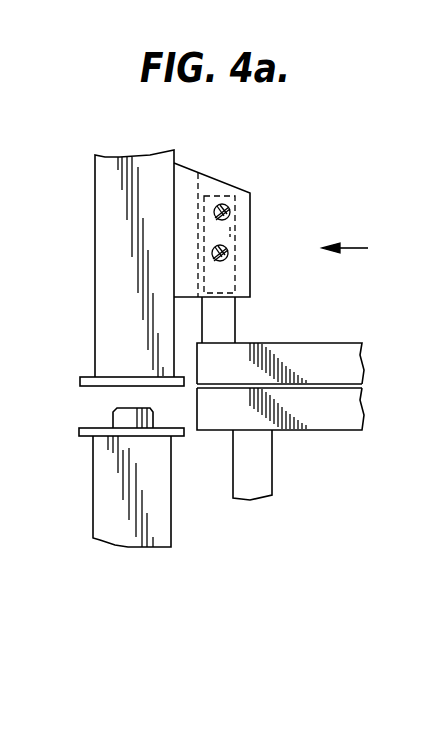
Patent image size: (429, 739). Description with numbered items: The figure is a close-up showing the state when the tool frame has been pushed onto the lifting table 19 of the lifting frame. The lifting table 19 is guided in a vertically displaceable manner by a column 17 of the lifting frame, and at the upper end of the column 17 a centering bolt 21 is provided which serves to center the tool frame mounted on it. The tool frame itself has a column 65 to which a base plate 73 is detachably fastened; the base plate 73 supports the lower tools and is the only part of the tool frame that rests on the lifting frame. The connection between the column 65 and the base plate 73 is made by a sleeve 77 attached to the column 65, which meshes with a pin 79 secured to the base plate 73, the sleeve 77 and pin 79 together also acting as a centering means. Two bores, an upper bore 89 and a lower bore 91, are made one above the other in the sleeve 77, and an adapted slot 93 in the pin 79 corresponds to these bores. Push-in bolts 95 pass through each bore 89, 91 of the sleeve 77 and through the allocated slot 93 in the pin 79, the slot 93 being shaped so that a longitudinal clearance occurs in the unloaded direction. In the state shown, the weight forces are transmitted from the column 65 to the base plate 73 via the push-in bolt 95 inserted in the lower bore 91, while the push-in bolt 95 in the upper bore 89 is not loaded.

The column 17 is at (103, 484).
The lifting table 19 is at (307, 429).
The centering bolt 21 is at (120, 419).
The column 65 is at (100, 205).
The base plate 73 is at (307, 350).
The sleeve 77 is at (187, 178).
The pin 79 is at (218, 316).
The upper bore 89 is at (227, 205).
The lower bore 91 is at (224, 263).
The slot 93 is at (230, 237).
The push-in bolt 95 is at (225, 220).